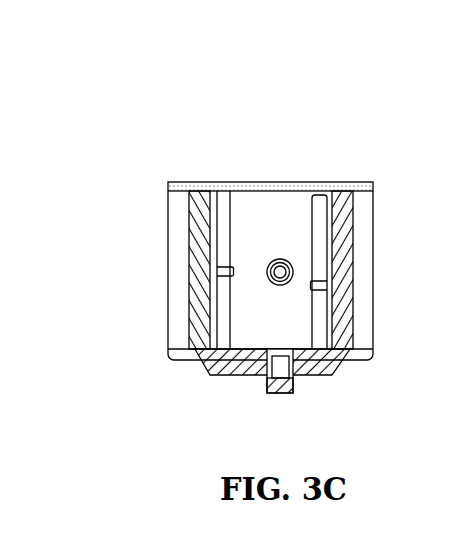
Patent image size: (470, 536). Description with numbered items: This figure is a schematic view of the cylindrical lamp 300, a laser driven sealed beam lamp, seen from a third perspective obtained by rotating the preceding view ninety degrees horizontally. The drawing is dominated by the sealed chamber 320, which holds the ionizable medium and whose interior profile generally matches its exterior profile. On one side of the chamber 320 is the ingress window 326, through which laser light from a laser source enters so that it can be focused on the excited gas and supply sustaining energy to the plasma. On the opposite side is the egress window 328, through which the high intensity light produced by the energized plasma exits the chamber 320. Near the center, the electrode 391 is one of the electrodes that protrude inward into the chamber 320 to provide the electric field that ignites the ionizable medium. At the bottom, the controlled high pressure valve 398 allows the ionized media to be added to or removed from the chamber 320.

The cylindrical lamp 300 is at (118, 88).
The sealed chamber 320 is at (358, 177).
The ingress window 326 is at (176, 305).
The egress window 328 is at (363, 297).
The electrode 391 is at (285, 285).
The controlled high pressure valve 398 is at (270, 392).